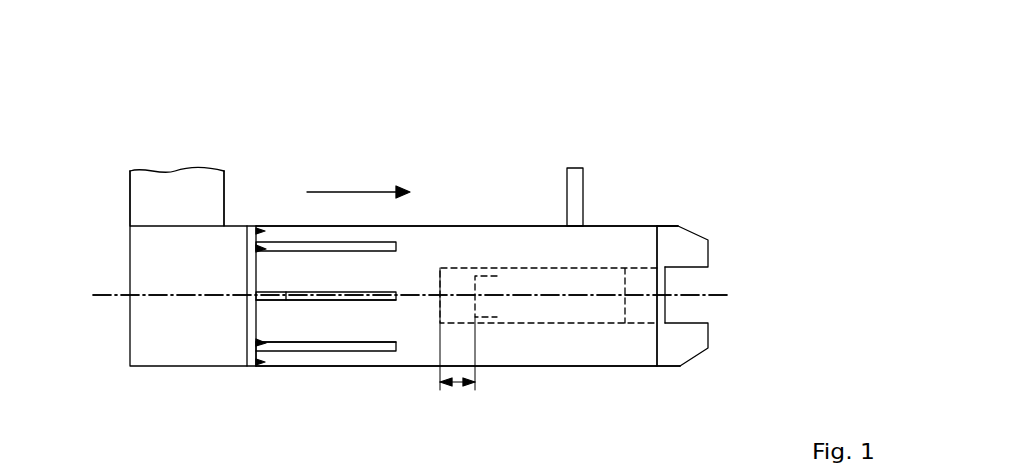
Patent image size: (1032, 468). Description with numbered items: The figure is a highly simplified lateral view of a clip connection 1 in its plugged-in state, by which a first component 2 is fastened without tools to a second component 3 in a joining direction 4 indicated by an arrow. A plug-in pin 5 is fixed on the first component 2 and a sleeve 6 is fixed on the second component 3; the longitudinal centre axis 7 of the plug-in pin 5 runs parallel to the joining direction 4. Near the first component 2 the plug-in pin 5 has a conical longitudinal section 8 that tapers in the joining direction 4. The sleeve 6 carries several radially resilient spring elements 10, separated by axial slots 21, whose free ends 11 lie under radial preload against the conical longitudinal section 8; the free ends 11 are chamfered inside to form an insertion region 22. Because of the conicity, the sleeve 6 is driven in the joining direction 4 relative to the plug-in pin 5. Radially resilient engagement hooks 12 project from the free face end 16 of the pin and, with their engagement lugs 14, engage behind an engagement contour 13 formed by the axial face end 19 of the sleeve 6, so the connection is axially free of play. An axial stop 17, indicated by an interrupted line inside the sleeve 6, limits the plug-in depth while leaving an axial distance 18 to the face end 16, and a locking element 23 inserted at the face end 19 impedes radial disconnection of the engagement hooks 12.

The clip connection 1 is at (716, 130).
The first component 2 is at (191, 158).
The second component 3 is at (578, 158).
The joining direction 4 is at (352, 192).
The plug-in pin 5 is at (241, 214).
The sleeve 6 is at (524, 214).
The longitudinal centre axis 7 is at (103, 295).
The conical longitudinal section 8 is at (256, 366).
The spring elements 10 is at (347, 325).
The free ends 11 is at (257, 322).
The engagement hooks 12 is at (690, 240).
The engagement contour 13 is at (657, 348).
The engagement lugs 14 is at (655, 240).
The free face end 16 is at (475, 287).
The axial stop 17 is at (440, 278).
The axial distance 18 is at (455, 382).
The axial face end 19 is at (665, 280).
The axial slots 21 is at (313, 300).
The chamfered insertion region 22 is at (257, 233).
The locking element 23 is at (665, 310).